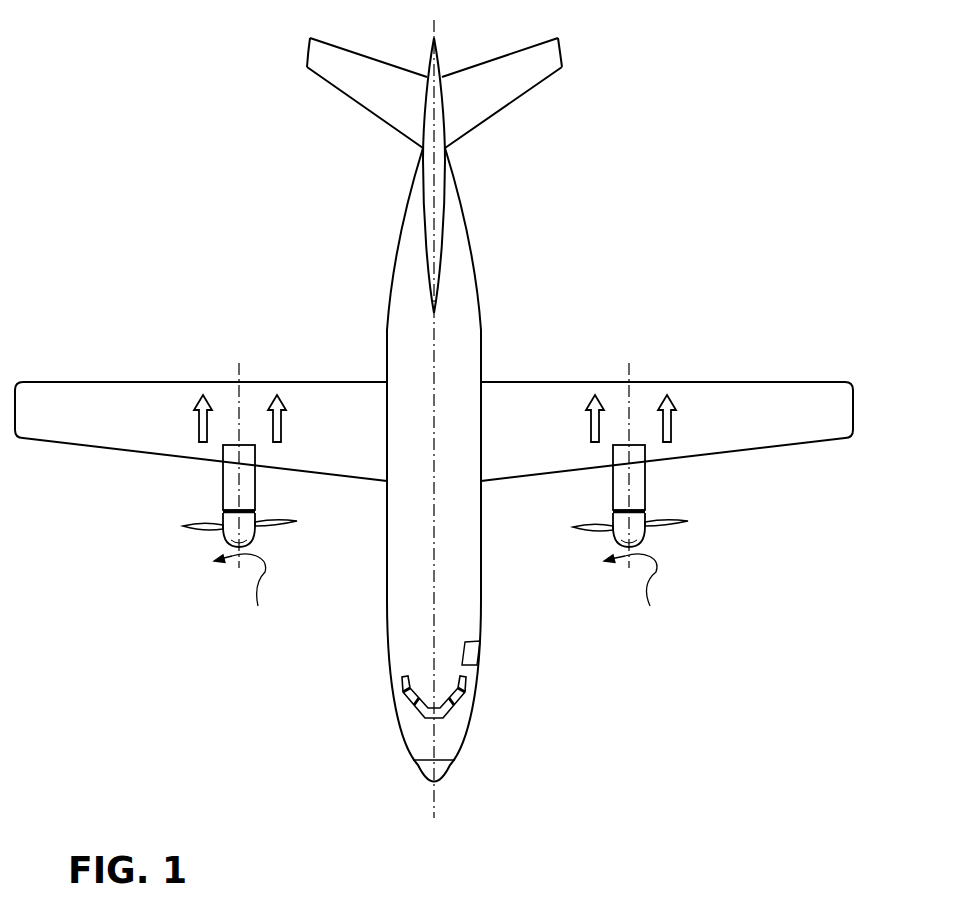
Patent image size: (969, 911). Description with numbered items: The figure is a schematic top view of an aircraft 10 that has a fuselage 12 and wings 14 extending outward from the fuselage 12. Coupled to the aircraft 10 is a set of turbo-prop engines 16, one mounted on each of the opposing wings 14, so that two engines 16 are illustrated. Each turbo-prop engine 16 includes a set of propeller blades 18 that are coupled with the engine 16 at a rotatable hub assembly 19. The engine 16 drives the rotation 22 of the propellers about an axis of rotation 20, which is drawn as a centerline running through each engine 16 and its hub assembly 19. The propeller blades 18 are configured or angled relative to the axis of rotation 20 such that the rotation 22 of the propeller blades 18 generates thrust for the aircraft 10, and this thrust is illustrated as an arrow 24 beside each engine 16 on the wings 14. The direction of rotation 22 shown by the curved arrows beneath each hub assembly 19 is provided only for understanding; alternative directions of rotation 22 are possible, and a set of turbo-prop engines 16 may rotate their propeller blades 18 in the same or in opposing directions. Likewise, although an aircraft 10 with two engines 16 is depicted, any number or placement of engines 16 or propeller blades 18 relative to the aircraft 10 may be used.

The aircraft 10 is at (434, 419).
The fuselage 12 is at (487, 320).
The wings 14 is at (90, 393).
The turbo-prop engine 16 is at (222, 493).
The propeller blades 18 is at (190, 527).
The rotatable hub assembly 19 is at (226, 538).
The axis of rotation 20 is at (236, 367).
The rotation 22 is at (440, 593).
The thrust 24 is at (196, 406).